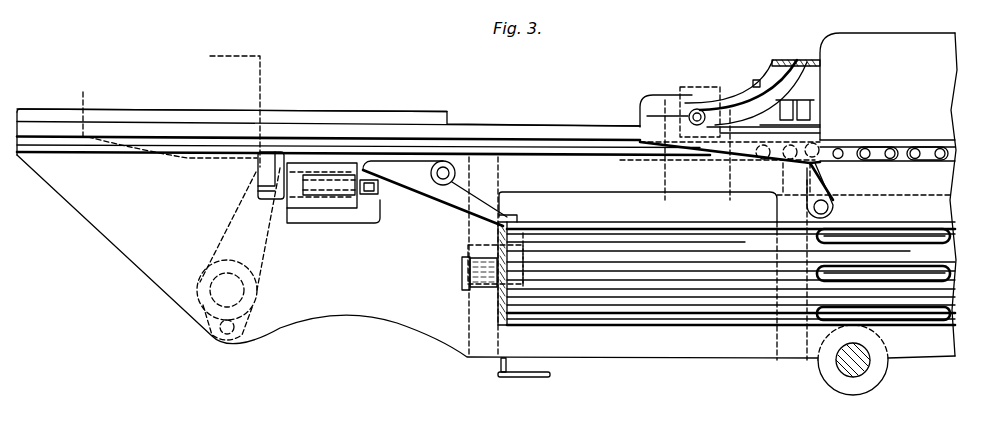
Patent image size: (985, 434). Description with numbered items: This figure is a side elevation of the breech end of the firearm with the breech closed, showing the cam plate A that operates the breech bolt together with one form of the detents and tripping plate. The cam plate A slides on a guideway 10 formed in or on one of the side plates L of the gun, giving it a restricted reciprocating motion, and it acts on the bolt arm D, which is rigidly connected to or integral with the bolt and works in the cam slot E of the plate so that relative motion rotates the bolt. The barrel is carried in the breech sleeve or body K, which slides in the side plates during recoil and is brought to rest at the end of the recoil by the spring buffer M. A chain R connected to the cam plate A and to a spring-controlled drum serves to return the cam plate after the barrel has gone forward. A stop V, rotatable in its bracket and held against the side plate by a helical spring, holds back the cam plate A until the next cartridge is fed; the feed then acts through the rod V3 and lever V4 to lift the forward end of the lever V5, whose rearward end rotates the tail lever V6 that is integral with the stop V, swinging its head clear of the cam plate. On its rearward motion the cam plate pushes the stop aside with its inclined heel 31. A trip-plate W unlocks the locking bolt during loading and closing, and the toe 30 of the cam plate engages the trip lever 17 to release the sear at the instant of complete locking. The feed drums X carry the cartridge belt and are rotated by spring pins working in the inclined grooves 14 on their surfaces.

The side plate L is at (87, 195).
The guideway 10 is at (565, 127).
The cam plate A is at (262, 58).
The spring buffer M is at (230, 233).
The stop V is at (257, 168).
The tail lever V6 is at (363, 202).
The lever V5 is at (460, 195).
The toe 30 is at (798, 163).
The feed drum X is at (668, 303).
The inclined grooves 14 is at (938, 280).
The lever V4 is at (500, 364).
The rod V3 is at (543, 376).
The breech sleeve or body K is at (877, 58).
The chain R is at (880, 150).
The inclined heel 31 is at (650, 145).
The trip lever 17 is at (817, 185).
The trip-plate W is at (687, 87).
The arm D is at (691, 112).
The cam slot E is at (747, 92).